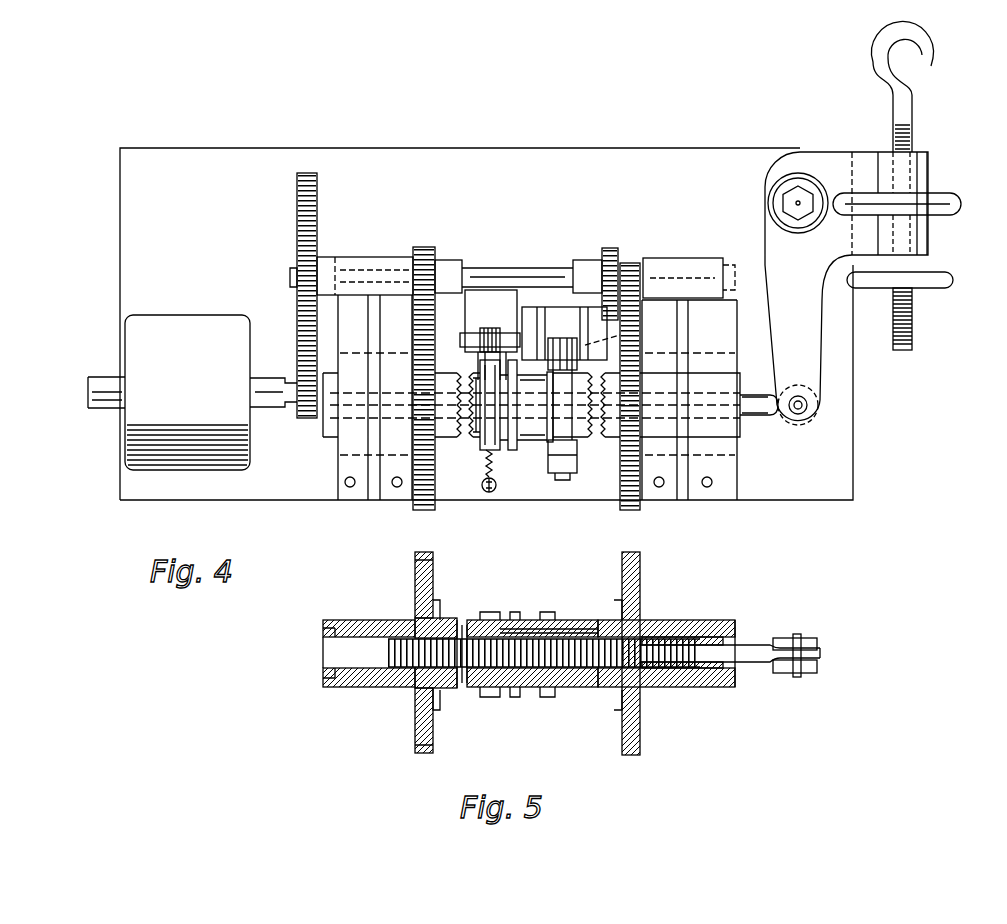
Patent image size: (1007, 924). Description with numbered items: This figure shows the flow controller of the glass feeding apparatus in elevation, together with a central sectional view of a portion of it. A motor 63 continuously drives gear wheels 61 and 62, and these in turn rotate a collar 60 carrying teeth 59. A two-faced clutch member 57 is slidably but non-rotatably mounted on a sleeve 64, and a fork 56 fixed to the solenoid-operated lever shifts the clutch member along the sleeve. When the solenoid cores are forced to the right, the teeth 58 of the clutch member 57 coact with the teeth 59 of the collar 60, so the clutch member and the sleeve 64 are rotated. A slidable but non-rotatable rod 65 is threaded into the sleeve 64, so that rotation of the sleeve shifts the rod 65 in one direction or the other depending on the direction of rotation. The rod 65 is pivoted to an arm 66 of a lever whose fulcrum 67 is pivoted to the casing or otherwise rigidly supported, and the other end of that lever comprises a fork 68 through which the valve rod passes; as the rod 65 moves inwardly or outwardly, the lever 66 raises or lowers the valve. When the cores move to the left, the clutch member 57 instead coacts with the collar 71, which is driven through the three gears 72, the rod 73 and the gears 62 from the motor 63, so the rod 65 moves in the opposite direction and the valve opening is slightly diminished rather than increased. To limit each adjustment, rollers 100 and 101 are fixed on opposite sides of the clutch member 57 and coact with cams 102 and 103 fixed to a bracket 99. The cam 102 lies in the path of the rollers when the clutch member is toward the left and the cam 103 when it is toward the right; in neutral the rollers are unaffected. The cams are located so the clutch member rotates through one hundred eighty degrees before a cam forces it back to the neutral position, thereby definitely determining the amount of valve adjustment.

In FIG. 4, the fork 56 is at (528, 452).
In FIG. 4, the two-faced clutch member 57 is at (513, 452).
In FIG. 5, the two-faced clutch member 57 is at (500, 612).
In FIG. 4, the teeth of the clutch member 58 is at (476, 440).
In FIG. 5, the teeth of the clutch member 58 is at (475, 690).
In FIG. 4, the teeth 59 is at (461, 425).
In FIG. 5, the teeth 59 is at (459, 690).
In FIG. 4, the collar 60 is at (436, 373).
In FIG. 5, the collar 60 is at (448, 618).
In FIG. 4, the gear wheel 61 is at (410, 298).
In FIG. 5, the gear wheel 61 is at (430, 590).
In FIG. 4, the gear wheel 62 is at (297, 322).
In FIG. 4, the motor 63 is at (186, 320).
In FIG. 5, the sleeve 64 is at (576, 690).
In FIG. 4, the rod 65 is at (753, 420).
In FIG. 5, the rod 65 is at (668, 670).
In FIG. 4, the arm of lever 66 is at (815, 362).
In FIG. 5, the arm of lever 66 is at (812, 640).
In FIG. 4, the fulcrum 67 is at (768, 232).
In FIG. 4, the fork 68 is at (950, 234).
In FIG. 4, the collar 71 is at (613, 440).
In FIG. 4, the three gears 72 is at (632, 263).
In FIG. 4, the rod or shaft 73 is at (524, 270).
In FIG. 4, the bracket 99 is at (520, 345).
In FIG. 4, the roller 100 is at (562, 480).
In FIG. 4, the roller 101 is at (560, 340).
In FIG. 5, the roller 101 is at (568, 630).
In FIG. 4, the cam 102 is at (530, 340).
In FIG. 4, the cam 103 is at (622, 335).